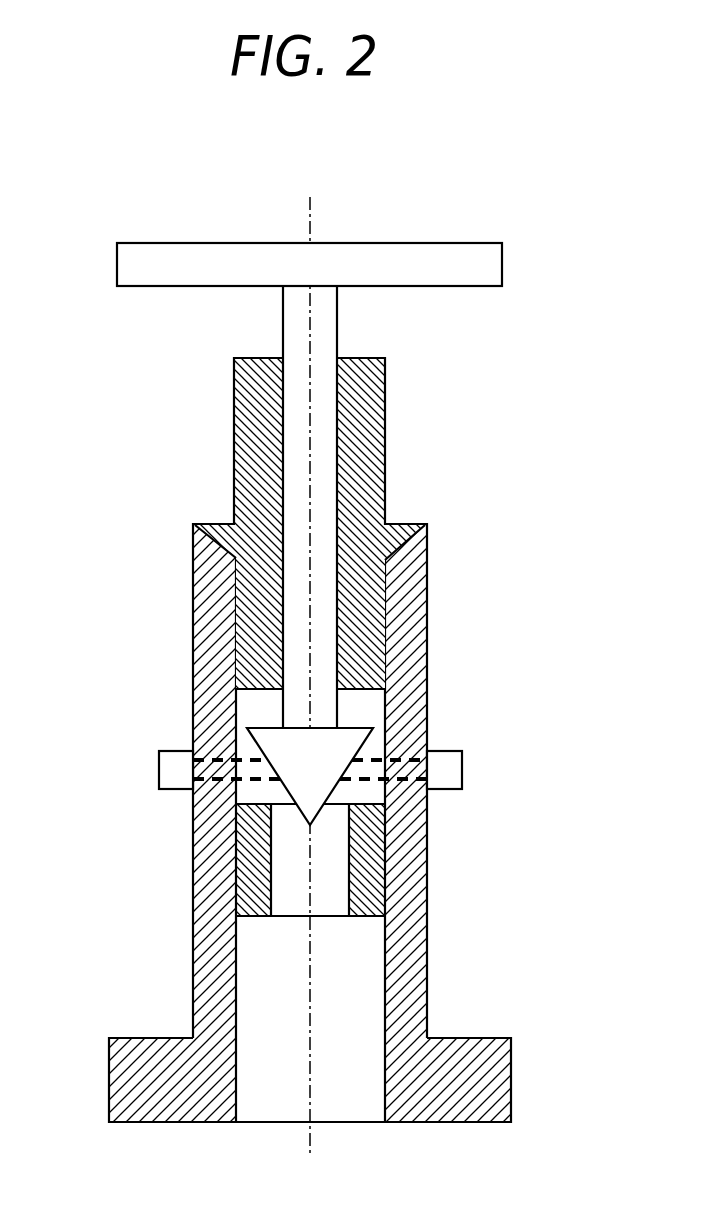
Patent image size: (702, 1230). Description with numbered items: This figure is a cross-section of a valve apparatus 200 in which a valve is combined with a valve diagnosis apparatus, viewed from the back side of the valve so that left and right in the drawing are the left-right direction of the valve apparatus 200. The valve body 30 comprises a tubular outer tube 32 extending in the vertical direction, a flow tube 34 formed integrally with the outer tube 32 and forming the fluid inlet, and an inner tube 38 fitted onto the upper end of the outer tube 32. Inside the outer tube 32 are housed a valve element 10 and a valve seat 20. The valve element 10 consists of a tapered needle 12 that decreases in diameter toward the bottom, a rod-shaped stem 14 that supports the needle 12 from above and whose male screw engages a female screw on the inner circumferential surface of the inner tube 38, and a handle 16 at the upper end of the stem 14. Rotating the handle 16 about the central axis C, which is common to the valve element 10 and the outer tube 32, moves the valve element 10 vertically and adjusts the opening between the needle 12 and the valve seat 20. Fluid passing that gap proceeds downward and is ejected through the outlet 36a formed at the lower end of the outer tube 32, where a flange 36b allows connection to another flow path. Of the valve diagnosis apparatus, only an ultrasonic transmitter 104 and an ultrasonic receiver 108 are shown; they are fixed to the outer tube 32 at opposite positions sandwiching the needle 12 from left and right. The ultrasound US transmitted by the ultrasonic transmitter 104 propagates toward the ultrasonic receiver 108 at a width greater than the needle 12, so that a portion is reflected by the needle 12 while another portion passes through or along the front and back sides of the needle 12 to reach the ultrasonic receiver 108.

The valve apparatus 200 is at (60, 199).
The central axis C is at (310, 660).
The valve element 10 is at (311, 503).
The needle 12 is at (352, 730).
The stem 14 is at (327, 328).
The handle 16 is at (402, 248).
The valve seat 20 is at (347, 923).
The valve body 30 is at (437, 600).
The outer tube 32 is at (407, 857).
The flow tube 34 is at (257, 712).
The outlet 36a is at (334, 1072).
The flange 36b is at (480, 1078).
The inner tube 38 is at (362, 434).
The ultrasonic transmitter 104 is at (170, 769).
The ultrasonic receiver 108 is at (452, 770).
The ultrasound US is at (252, 755).